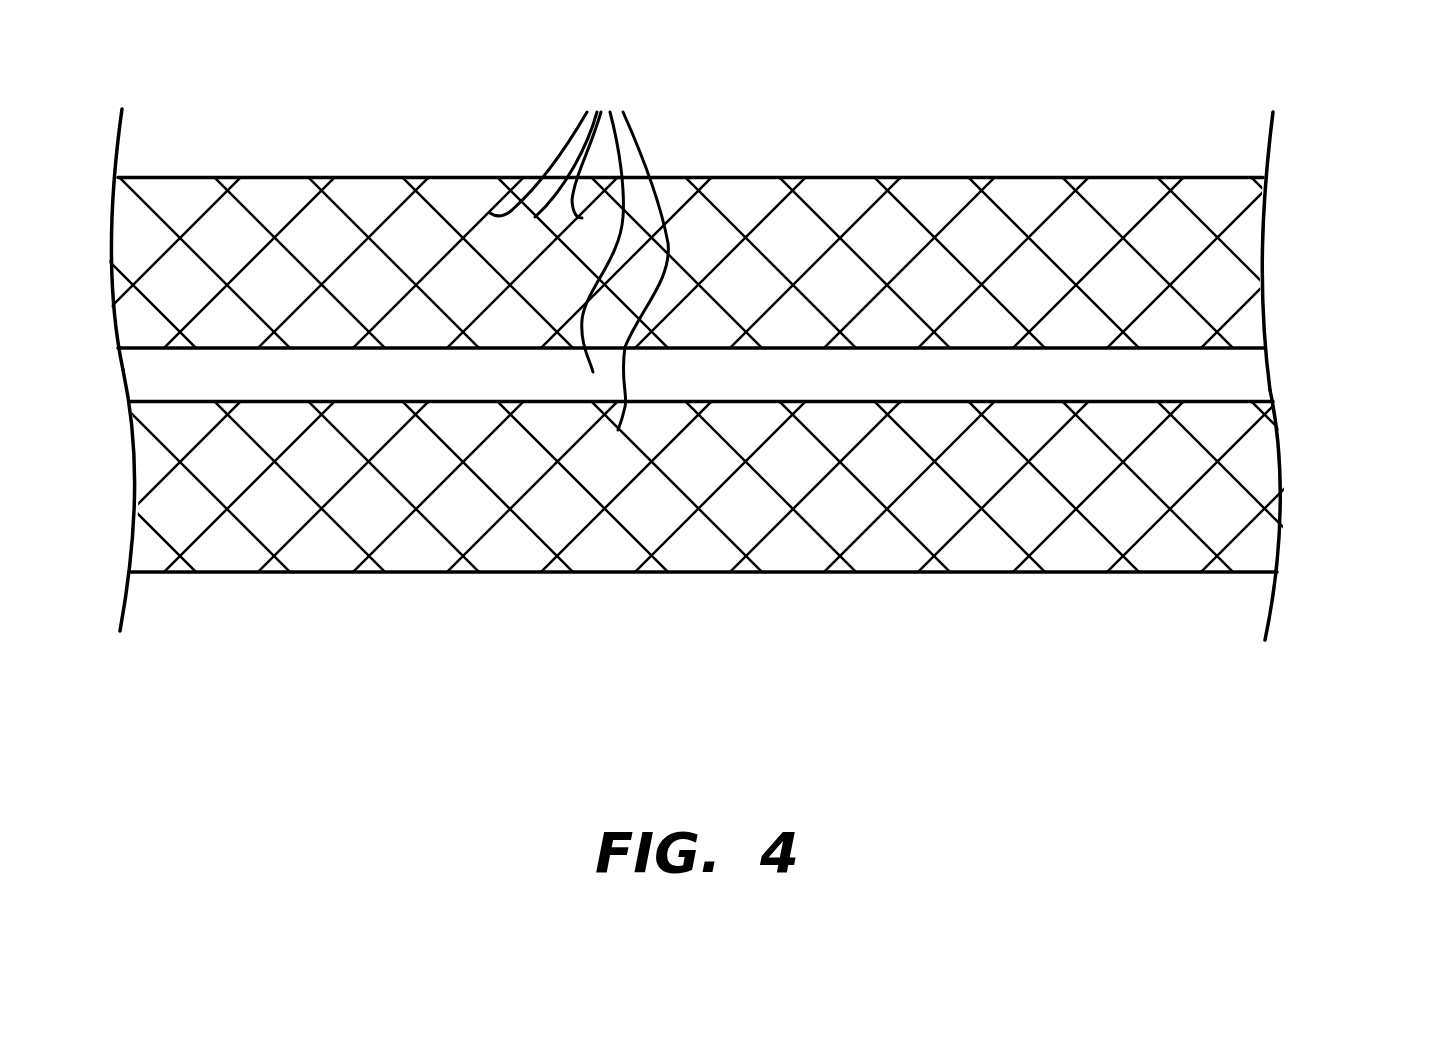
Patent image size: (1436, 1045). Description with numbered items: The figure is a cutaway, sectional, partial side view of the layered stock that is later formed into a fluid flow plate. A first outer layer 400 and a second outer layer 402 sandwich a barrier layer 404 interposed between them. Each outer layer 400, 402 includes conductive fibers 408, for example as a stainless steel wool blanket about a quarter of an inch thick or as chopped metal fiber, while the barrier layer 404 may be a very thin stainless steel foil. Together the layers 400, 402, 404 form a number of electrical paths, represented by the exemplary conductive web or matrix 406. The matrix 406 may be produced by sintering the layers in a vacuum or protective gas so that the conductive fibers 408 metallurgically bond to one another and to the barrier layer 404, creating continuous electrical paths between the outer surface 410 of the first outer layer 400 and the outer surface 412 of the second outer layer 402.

The first outer layer 400 is at (1292, 233).
The second outer layer 402 is at (1307, 483).
The barrier layer 404 is at (1255, 382).
The conductive matrix 406 is at (579, 253).
The conductive fibers 408 is at (450, 217).
The outer surface 410 is at (833, 167).
The outer surface 412 is at (825, 592).